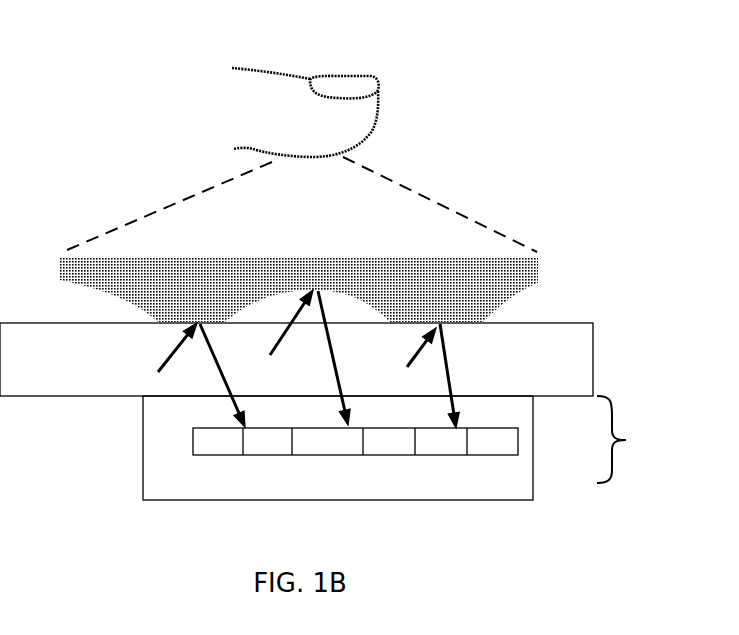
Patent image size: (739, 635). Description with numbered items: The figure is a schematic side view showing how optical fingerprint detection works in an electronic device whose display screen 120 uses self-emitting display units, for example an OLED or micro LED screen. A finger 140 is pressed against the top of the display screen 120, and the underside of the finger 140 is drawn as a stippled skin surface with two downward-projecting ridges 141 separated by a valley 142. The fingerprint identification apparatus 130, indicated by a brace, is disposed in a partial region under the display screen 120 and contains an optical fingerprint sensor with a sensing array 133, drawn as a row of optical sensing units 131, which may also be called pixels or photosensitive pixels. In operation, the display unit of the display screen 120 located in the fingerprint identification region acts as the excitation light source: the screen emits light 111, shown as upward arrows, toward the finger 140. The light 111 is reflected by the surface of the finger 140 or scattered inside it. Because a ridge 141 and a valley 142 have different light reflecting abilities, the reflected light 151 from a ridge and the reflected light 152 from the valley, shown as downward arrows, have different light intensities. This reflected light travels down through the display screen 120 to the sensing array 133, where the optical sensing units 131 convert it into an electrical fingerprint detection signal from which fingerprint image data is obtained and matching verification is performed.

The finger 140 is at (267, 76).
The ridge 141 is at (299, 290).
The valley 142 is at (313, 272).
The display screen 120 is at (593, 360).
The fingerprint identification apparatus 130 is at (406, 448).
The sensing array 133 is at (193, 438).
The optical sensing unit 131 is at (355, 441).
The light 111 is at (278, 336).
The reflected light from the ridge 151 is at (344, 376).
The reflected light from the valley 152 is at (341, 358).